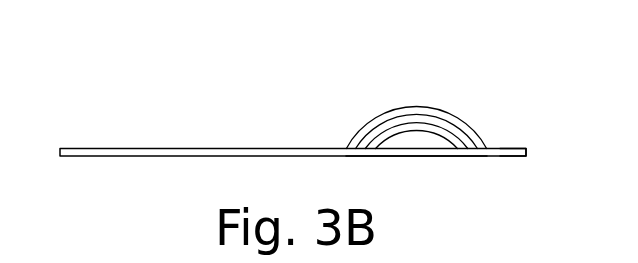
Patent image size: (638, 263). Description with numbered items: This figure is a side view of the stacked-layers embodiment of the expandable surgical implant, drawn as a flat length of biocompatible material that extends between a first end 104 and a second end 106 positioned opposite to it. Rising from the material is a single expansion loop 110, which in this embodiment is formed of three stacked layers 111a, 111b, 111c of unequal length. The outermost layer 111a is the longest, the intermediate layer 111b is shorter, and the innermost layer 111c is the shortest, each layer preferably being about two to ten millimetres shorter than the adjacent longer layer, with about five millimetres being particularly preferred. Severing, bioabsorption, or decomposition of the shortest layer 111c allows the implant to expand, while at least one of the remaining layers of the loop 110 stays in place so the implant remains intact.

The first end 104 is at (68, 156).
The second end 106 is at (519, 156).
The expansion loop 110 is at (413, 80).
The layer 111a is at (448, 112).
The layer 111b is at (461, 137).
The layer 111c is at (412, 156).